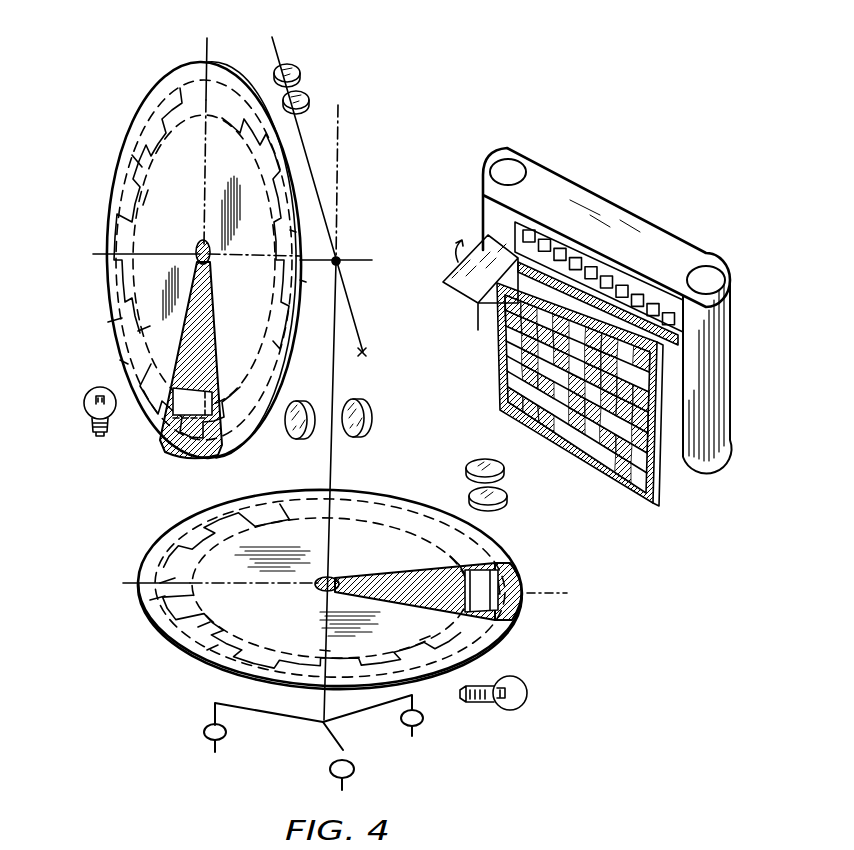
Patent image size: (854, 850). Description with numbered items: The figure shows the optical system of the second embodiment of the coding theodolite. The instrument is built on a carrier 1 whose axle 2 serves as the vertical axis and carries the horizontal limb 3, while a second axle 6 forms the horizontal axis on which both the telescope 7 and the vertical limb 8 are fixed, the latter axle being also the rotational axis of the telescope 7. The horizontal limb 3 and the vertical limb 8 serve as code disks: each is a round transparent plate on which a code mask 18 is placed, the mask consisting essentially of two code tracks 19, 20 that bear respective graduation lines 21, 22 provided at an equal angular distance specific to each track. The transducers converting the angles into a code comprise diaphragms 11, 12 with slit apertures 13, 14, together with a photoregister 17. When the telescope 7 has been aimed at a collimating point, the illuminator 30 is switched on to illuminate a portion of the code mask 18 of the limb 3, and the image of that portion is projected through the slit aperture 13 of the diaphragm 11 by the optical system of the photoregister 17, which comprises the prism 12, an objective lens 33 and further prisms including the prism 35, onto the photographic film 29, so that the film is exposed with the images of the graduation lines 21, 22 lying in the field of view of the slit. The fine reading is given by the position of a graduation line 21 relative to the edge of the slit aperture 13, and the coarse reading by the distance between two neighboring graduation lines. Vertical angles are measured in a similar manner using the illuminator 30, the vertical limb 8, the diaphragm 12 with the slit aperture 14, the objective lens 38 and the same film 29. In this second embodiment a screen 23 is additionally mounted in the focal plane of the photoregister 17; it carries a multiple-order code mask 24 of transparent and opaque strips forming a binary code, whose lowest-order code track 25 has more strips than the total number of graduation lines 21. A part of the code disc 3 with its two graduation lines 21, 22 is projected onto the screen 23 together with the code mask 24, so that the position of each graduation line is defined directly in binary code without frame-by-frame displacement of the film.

The carrier 1 is at (278, 717).
The axle 2 is at (325, 705).
The horizontal limb 3 is at (482, 648).
The axle 6 is at (360, 243).
The telescope 7 is at (300, 128).
The vertical limb 8 is at (137, 285).
The diaphragm 11 is at (523, 590).
The diaphragm 12 is at (190, 487).
The slit aperture 13 is at (493, 597).
The slit aperture 14 is at (168, 447).
The photoregister 17 is at (658, 250).
The code mask 18 is at (172, 105).
The code track 19 is at (123, 240).
The code track 20 is at (230, 100).
The graduation lines 21 is at (138, 331).
The graduation lines 22 is at (143, 205).
The screen 23 is at (657, 458).
The code mask 24 is at (572, 403).
The code track 25 is at (657, 377).
The photographic film 29 is at (583, 263).
The illuminator 30 is at (98, 427).
The objective lens 33 is at (477, 460).
The prism 35 is at (480, 263).
The objective lens 38 is at (345, 430).